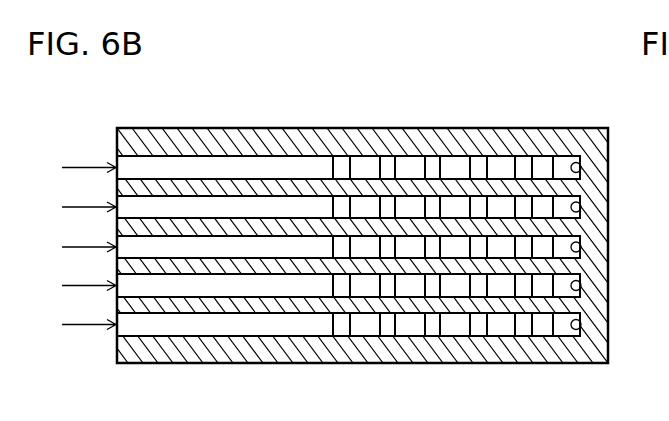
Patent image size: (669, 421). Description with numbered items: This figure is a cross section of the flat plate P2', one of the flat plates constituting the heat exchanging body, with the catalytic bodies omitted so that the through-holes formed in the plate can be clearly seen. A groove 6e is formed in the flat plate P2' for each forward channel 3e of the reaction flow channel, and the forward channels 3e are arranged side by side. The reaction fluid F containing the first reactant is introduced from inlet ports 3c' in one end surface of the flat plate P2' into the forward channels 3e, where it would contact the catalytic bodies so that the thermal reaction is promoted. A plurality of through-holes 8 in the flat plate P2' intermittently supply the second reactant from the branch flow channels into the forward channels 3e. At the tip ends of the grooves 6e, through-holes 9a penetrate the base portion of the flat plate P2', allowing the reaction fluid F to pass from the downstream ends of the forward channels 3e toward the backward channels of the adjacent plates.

The groove 6e is at (334, 219).
The forward channel 3e is at (158, 323).
The inlet port 3c' is at (322, 233).
The through-hole 8 is at (515, 156).
The through-hole 9a is at (581, 328).
The reaction fluid F is at (79, 246).
The flat plate P2' is at (334, 239).